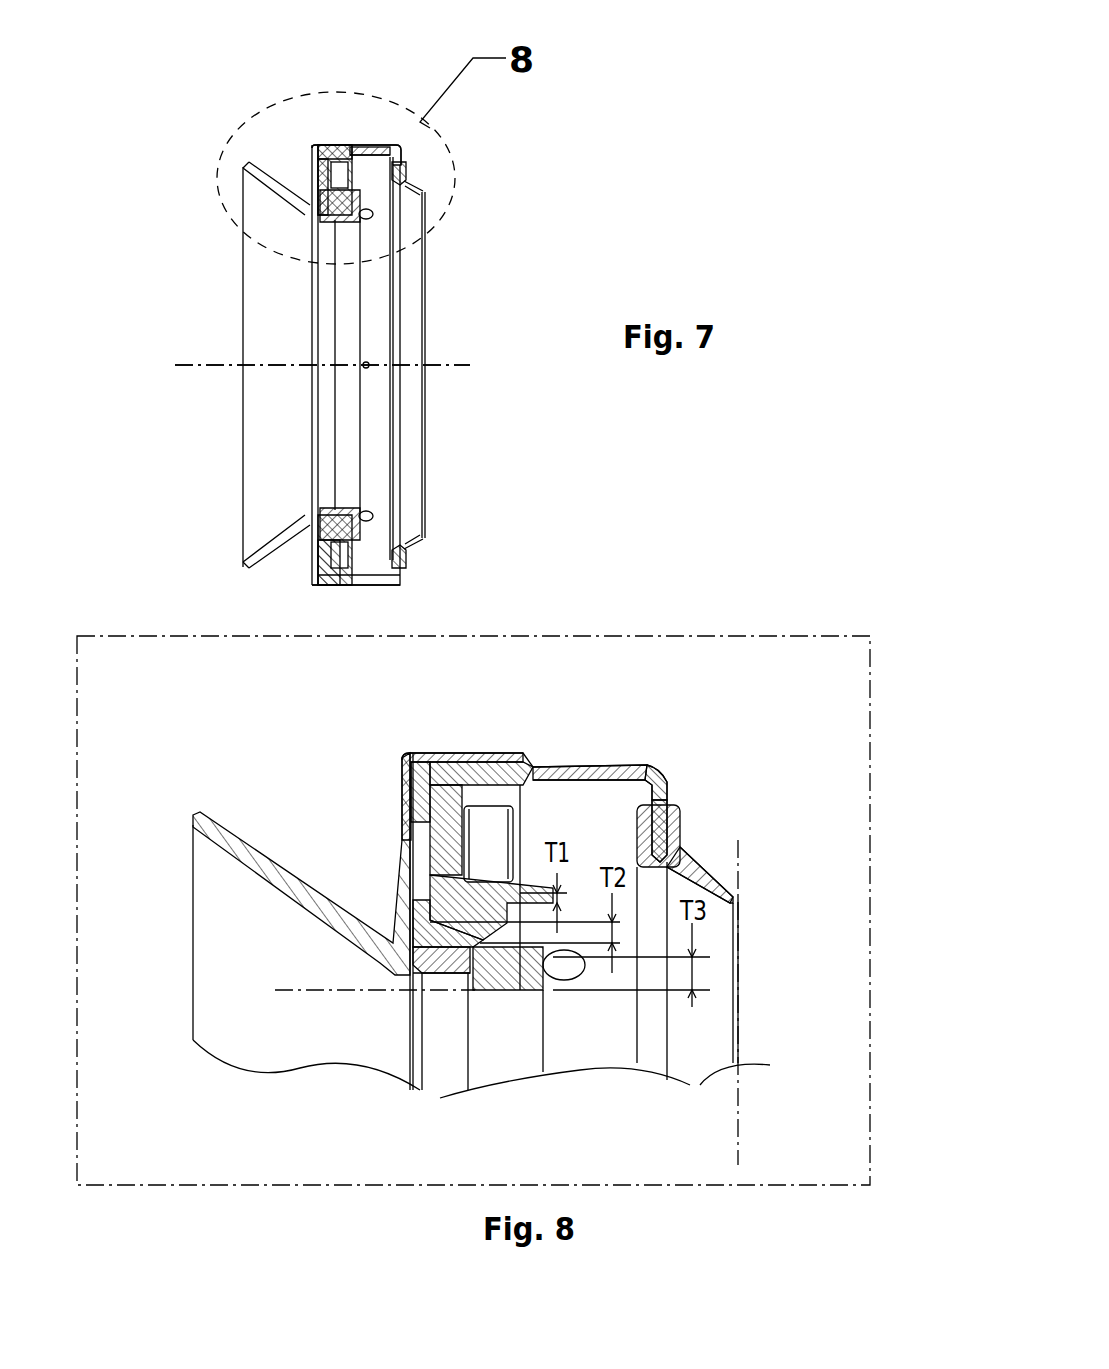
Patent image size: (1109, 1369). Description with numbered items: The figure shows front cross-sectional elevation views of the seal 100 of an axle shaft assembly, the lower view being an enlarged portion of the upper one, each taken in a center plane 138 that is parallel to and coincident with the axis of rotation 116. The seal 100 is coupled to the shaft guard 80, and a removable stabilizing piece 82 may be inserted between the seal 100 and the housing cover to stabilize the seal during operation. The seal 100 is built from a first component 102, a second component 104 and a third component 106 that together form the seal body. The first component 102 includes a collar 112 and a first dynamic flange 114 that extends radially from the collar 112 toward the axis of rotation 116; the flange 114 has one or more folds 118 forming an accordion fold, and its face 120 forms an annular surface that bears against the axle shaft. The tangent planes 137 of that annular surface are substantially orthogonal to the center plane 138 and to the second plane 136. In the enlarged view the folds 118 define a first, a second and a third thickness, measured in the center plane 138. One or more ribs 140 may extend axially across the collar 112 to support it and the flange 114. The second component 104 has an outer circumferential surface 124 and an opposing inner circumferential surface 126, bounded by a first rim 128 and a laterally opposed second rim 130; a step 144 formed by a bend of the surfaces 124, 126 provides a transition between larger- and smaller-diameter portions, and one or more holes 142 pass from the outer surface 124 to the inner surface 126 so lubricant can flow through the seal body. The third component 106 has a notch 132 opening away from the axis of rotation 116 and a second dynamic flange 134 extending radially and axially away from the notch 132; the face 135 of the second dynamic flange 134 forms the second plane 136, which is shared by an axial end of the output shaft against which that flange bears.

In FIG. 7, the shaft guard 80 is at (268, 345).
In FIG. 8, the shaft guard 80 is at (230, 956).
In FIG. 7, the removable stabilizing piece 82 is at (320, 236).
In FIG. 8, the removable stabilizing piece 82 is at (438, 1050).
In FIG. 7, the seal 100 is at (600, 170).
In FIG. 8, the seal 100 is at (790, 684).
In FIG. 7, the first component 102 is at (352, 332).
In FIG. 8, the first component 102 is at (468, 790).
In FIG. 7, the second component 104 is at (385, 147).
In FIG. 8, the second component 104 is at (616, 790).
In FIG. 7, the third component 106 is at (415, 262).
In FIG. 8, the third component 106 is at (740, 1040).
In FIG. 7, the collar 112 is at (328, 148).
In FIG. 8, the collar 112 is at (500, 778).
In FIG. 7, the first dynamic flange 114 is at (350, 510).
In FIG. 8, the first dynamic flange 114 is at (470, 882).
In FIG. 7, the axis of rotation 116 is at (175, 364).
In FIG. 7, the folds 118 is at (330, 535).
In FIG. 8, the folds 118 is at (445, 902).
In FIG. 7, the face 120 is at (345, 415).
In FIG. 8, the face 120 is at (510, 1050).
In FIG. 7, the outer circumferential surface 124 is at (322, 157).
In FIG. 8, the outer circumferential surface 124 is at (592, 772).
In FIG. 7, the inner circumferential surface 126 is at (368, 147).
In FIG. 8, the inner circumferential surface 126 is at (652, 776).
In FIG. 7, the first rim 128 is at (402, 157).
In FIG. 8, the first rim 128 is at (663, 802).
In FIG. 7, the second rim 130 is at (311, 160).
In FIG. 8, the second rim 130 is at (404, 775).
In FIG. 7, the notch 132 is at (407, 172).
In FIG. 8, the notch 132 is at (682, 832).
In FIG. 7, the second dynamic flange 134 is at (417, 447).
In FIG. 8, the second dynamic flange 134 is at (740, 990).
In FIG. 7, the face 135 is at (425, 412).
In FIG. 8, the face 135 is at (741, 950).
In FIG. 8, the second plane 136 is at (742, 1100).
In FIG. 7, the tangent planes 137 is at (370, 221).
In FIG. 8, the tangent planes 137 is at (525, 1000).
In FIG. 8, the center plane 138 is at (873, 718).
In FIG. 7, the ribs 140 is at (332, 586).
In FIG. 7, the holes 142 is at (372, 522).
In FIG. 7, the step 144 is at (336, 147).
In FIG. 8, the step 144 is at (488, 805).